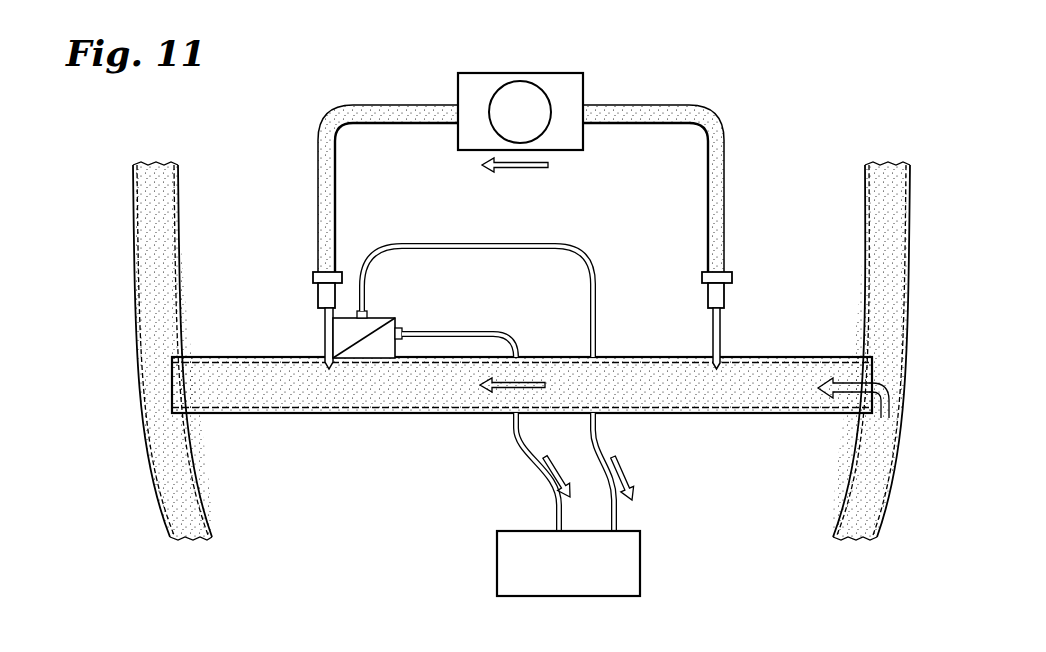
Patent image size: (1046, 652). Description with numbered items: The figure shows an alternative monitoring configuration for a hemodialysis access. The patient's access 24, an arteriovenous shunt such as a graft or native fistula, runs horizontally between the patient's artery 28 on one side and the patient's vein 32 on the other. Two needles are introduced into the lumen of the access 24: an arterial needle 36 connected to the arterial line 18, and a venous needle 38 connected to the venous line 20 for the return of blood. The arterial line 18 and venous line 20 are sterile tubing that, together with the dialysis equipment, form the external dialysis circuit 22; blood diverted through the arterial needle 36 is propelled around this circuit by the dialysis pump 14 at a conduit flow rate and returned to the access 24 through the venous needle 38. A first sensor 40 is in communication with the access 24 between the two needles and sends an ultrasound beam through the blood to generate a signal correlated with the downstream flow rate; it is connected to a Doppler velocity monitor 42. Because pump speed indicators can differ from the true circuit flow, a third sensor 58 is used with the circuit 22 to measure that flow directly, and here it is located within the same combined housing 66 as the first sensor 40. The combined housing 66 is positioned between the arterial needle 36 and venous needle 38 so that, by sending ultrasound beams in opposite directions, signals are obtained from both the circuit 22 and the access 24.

The dialysis pump 14 is at (560, 73).
The external dialysis circuit 22 is at (737, 73).
The venous line 20 is at (342, 113).
The arterial line 18 is at (715, 133).
The third sensor 58 is at (350, 318).
The combined housing 66 is at (392, 298).
The first sensor 40 is at (385, 336).
The venous needle 38 is at (325, 341).
The arterial needle 36 is at (713, 341).
The artery 28 is at (862, 205).
The vein 32 is at (142, 440).
The access 24 is at (343, 413).
The Doppler velocity monitor 42 is at (642, 562).